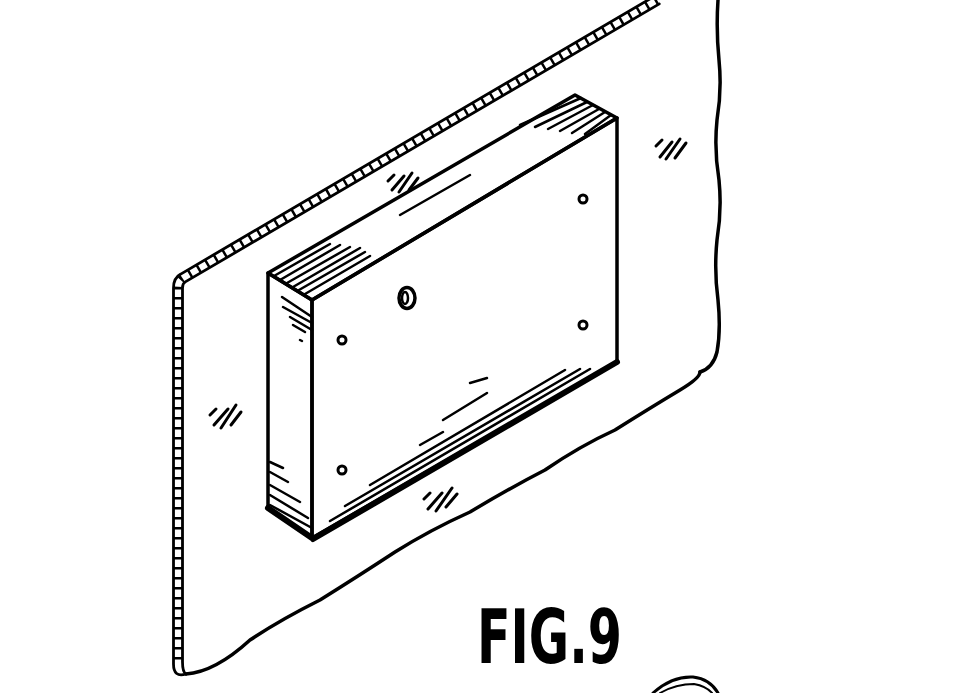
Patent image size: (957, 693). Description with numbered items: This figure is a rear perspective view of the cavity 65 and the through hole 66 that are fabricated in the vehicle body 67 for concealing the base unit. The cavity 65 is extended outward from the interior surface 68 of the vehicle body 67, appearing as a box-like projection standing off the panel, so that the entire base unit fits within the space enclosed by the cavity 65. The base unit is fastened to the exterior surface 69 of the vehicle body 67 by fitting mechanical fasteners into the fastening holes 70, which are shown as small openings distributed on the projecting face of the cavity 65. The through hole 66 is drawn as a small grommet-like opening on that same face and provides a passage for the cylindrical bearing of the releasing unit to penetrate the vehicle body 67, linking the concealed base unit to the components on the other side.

The cavity 65 is at (493, 318).
The through hole 66 is at (415, 305).
The vehicle body 67 is at (658, 93).
The interior surface 68 is at (675, 302).
The exterior surface 69 is at (173, 365).
The fastening holes 70 is at (588, 325).